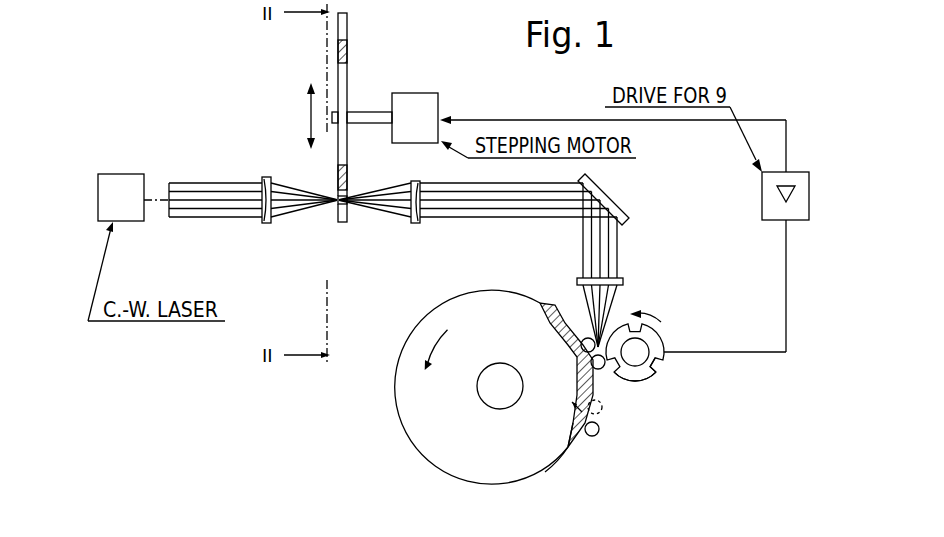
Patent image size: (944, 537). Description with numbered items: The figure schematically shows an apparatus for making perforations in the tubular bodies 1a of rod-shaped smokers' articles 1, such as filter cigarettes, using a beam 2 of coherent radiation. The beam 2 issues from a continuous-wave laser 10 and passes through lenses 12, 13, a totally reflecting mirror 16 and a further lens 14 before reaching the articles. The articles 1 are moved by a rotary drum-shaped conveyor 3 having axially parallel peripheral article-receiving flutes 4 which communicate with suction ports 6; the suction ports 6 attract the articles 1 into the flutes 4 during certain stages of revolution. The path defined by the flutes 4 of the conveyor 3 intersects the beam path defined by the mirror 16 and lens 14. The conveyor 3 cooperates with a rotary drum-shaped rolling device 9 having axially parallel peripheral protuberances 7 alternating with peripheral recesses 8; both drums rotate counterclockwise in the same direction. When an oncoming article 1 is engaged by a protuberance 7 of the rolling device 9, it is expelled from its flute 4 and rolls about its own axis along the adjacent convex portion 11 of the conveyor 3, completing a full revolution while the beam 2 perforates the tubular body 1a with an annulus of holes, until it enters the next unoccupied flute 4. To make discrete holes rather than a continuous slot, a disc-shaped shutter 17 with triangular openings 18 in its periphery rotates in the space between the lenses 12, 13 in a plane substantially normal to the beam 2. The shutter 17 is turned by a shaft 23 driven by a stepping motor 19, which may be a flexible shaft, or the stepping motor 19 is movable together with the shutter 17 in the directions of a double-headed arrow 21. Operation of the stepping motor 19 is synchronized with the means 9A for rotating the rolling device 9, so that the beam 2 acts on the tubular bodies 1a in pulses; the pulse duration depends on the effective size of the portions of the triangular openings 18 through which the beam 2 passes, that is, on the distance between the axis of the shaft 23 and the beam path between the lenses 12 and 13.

The rod-shaped smokers' article 1 is at (600, 430).
The tubular body 1a is at (600, 436).
The beam of coherent radiation 2 is at (607, 314).
The rotary drum-shaped conveyor 3 is at (522, 470).
The article-receiving flute 4 is at (560, 460).
The suction port 6 is at (553, 302).
The peripheral protuberance 7 is at (657, 340).
The peripheral recess 8 is at (658, 367).
The rotary drum-shaped rolling device 9 is at (650, 390).
The means for rotating the rolling device 9A is at (773, 215).
The continuous-wave laser 10 is at (122, 176).
The convex portion of the peripheral surface 11 is at (570, 450).
The lens 12 is at (264, 223).
The lens 13 is at (413, 224).
The further lens 14 is at (616, 283).
The totally reflecting mirror 16 is at (607, 202).
The disc-shaped shutter 17 is at (358, 42).
The triangular opening 18 is at (336, 224).
The stepping motor 19 is at (432, 104).
The double-headed arrow 21 is at (311, 116).
The shaft 23 is at (357, 112).